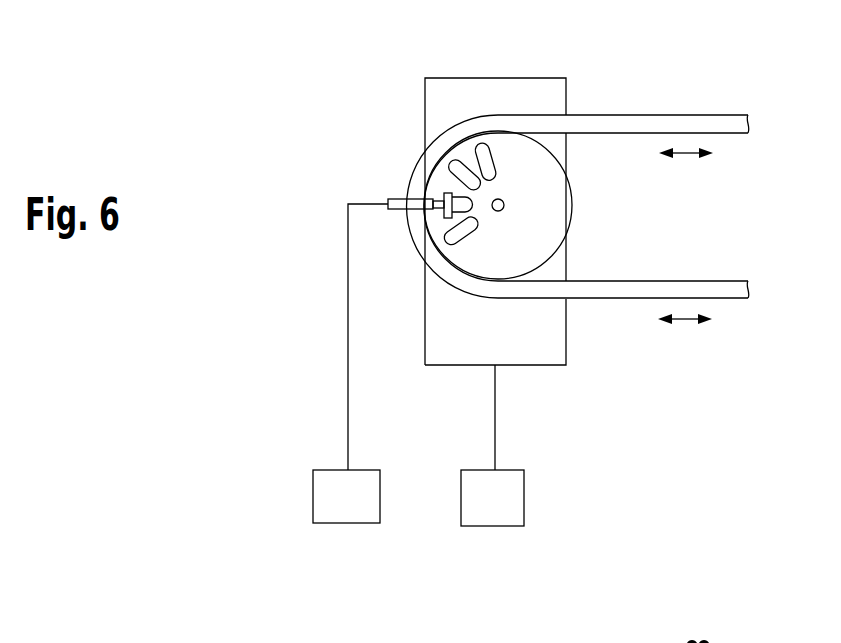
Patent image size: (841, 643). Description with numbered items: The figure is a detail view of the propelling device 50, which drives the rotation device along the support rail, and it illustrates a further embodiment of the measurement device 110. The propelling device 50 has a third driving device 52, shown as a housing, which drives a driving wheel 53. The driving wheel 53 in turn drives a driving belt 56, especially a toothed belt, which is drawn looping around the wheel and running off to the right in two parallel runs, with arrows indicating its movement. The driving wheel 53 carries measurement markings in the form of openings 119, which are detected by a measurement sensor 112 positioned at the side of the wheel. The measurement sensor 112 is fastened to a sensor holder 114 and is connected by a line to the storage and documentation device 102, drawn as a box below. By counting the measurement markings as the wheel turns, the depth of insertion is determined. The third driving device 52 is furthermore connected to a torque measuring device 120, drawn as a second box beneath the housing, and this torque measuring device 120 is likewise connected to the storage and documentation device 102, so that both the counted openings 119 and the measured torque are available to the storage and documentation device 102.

The propelling device 50 is at (366, 69).
The third driving device 52 is at (538, 90).
The driving wheel 53 is at (542, 181).
The driving belt 56 is at (687, 124).
The measurement device 110 is at (453, 162).
The openings 119 is at (482, 157).
The measurement sensor 112 is at (423, 177).
The sensor holder 114 is at (408, 198).
The storage and documentation device 102 is at (335, 495).
The torque measuring device 120 is at (500, 496).